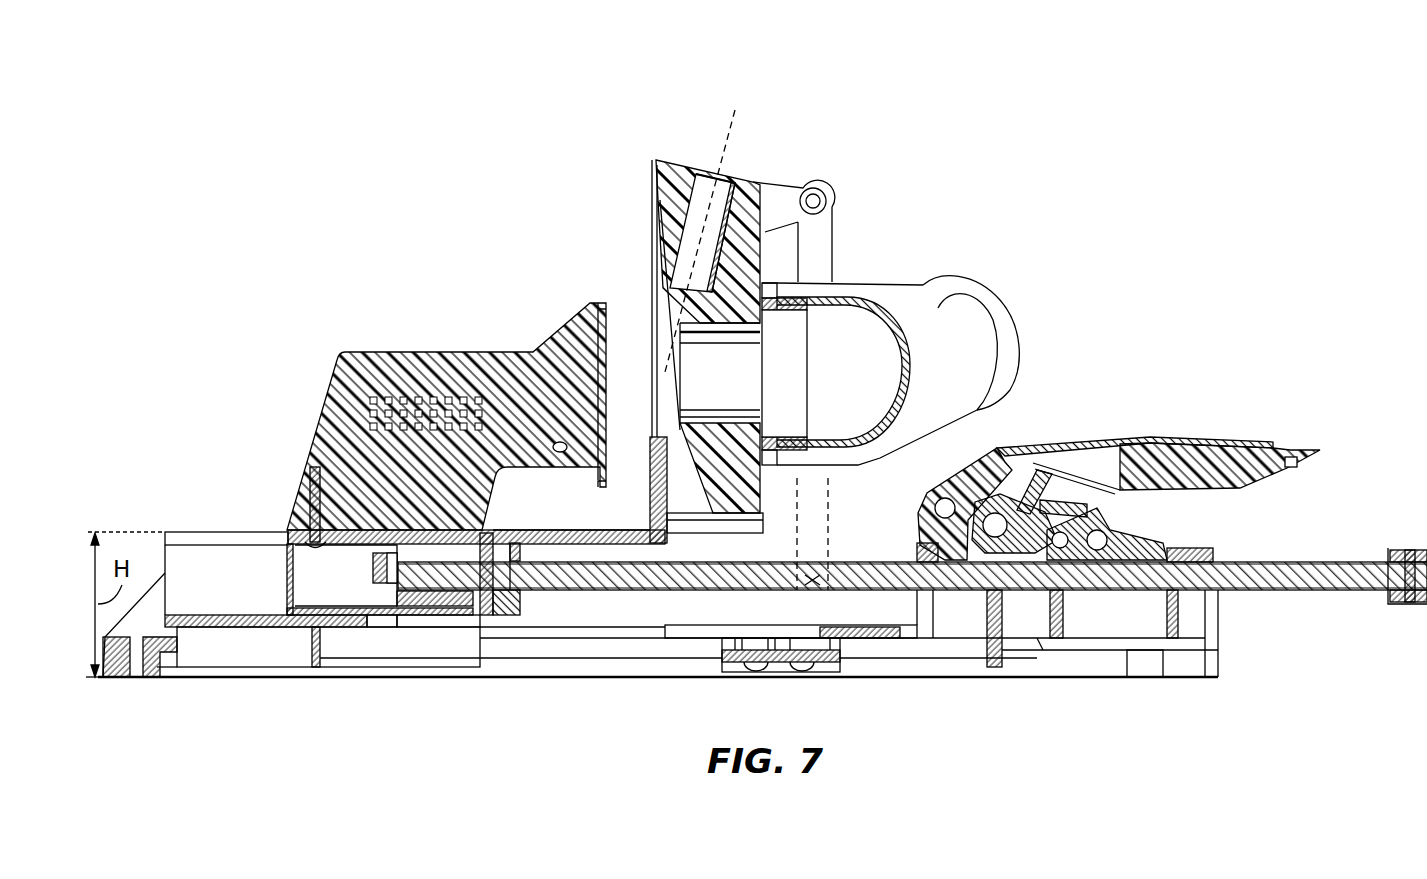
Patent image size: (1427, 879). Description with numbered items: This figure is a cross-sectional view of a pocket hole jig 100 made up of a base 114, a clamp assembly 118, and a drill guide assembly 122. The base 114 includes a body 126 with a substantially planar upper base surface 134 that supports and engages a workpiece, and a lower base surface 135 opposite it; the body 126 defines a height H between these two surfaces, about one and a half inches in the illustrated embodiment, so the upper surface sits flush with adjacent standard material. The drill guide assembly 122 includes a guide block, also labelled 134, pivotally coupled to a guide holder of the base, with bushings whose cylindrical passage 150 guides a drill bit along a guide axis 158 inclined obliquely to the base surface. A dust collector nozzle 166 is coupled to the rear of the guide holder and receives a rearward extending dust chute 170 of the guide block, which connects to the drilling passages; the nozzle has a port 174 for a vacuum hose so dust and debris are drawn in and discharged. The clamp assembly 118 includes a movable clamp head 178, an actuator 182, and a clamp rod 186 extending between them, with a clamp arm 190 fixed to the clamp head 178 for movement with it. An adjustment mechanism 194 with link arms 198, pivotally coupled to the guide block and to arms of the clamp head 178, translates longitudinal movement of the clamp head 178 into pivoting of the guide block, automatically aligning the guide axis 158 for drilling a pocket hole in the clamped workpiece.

The pocket hole jig 100 is at (412, 118).
The base 114 is at (434, 713).
The clamp assembly 118 is at (310, 369).
The drill guide assembly 122 is at (584, 191).
The body 126 is at (1063, 668).
The base surface 134 is at (658, 181).
The lower base surface 135 is at (357, 680).
The second cylindrical passage 150 is at (706, 178).
The guide axis 158 is at (742, 121).
The dust collector nozzle 166 is at (935, 316).
The dust chute 170 is at (788, 318).
The port 174 is at (1022, 335).
The clamp head 178 is at (503, 530).
The actuator 182 is at (1190, 445).
The clamp rod 186 is at (1275, 592).
The clamp arm 190 is at (483, 351).
The adjustment mechanism 194 is at (866, 233).
The link arms 198 is at (838, 220).